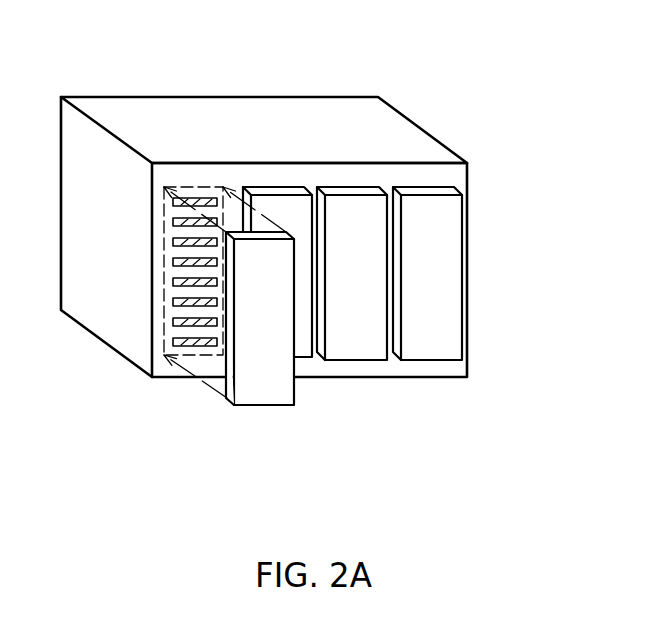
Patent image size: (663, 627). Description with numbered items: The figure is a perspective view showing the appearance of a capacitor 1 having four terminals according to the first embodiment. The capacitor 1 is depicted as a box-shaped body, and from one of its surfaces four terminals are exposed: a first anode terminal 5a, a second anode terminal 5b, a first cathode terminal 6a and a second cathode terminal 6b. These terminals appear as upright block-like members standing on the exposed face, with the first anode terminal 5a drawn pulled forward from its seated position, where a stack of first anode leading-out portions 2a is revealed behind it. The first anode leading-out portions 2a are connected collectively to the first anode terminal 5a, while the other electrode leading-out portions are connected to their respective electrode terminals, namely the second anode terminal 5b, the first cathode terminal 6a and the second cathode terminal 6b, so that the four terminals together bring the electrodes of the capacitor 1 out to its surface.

The capacitor 1 is at (367, 122).
The first anode leading-out portions 2a is at (178, 268).
The first anode terminal 5a is at (260, 378).
The second anode terminal 5b is at (442, 248).
The first cathode terminal 6a is at (298, 340).
The second cathode terminal 6b is at (358, 315).